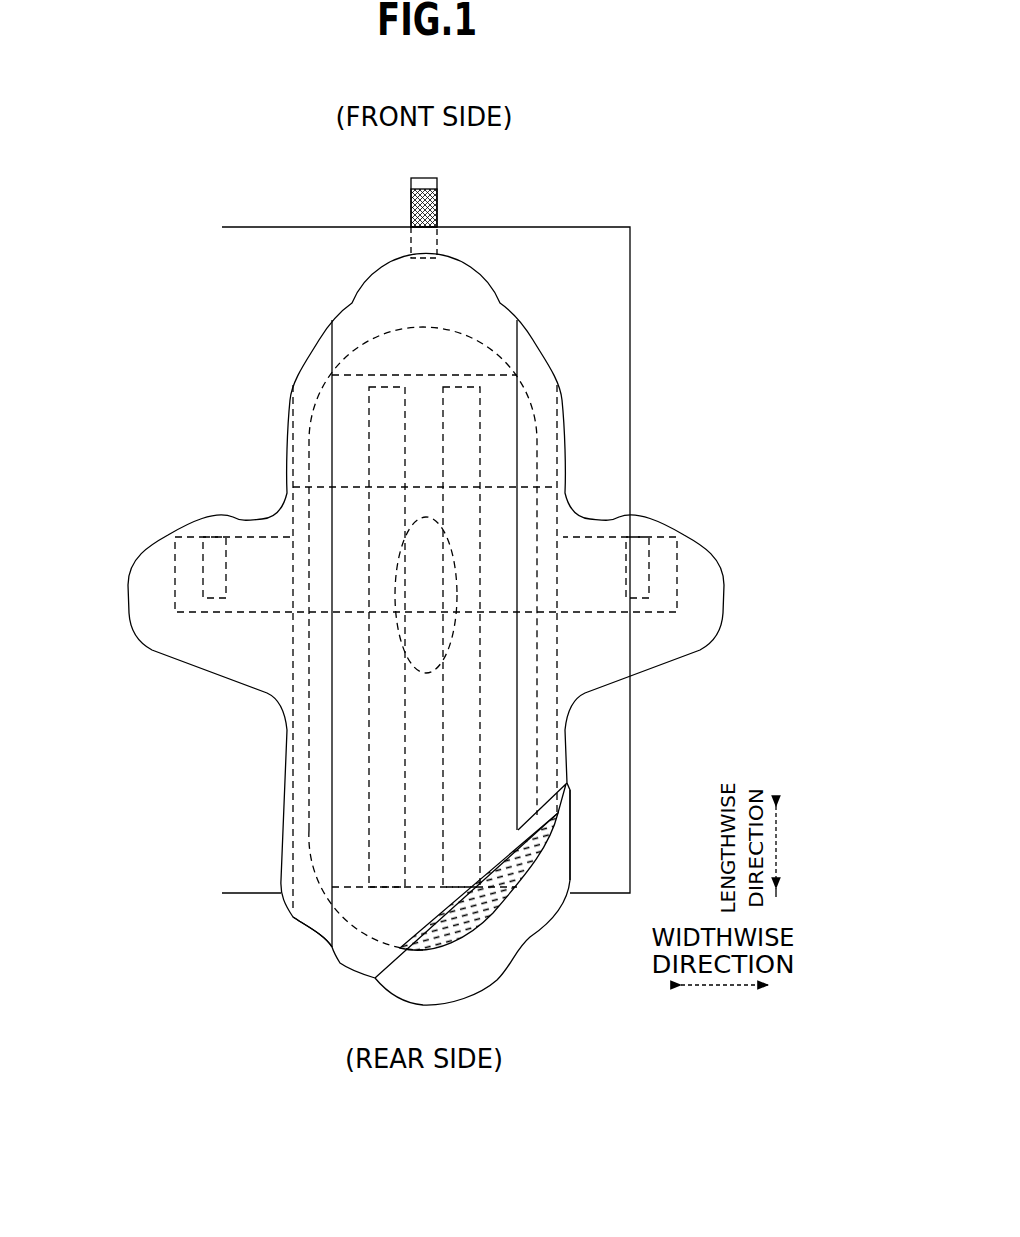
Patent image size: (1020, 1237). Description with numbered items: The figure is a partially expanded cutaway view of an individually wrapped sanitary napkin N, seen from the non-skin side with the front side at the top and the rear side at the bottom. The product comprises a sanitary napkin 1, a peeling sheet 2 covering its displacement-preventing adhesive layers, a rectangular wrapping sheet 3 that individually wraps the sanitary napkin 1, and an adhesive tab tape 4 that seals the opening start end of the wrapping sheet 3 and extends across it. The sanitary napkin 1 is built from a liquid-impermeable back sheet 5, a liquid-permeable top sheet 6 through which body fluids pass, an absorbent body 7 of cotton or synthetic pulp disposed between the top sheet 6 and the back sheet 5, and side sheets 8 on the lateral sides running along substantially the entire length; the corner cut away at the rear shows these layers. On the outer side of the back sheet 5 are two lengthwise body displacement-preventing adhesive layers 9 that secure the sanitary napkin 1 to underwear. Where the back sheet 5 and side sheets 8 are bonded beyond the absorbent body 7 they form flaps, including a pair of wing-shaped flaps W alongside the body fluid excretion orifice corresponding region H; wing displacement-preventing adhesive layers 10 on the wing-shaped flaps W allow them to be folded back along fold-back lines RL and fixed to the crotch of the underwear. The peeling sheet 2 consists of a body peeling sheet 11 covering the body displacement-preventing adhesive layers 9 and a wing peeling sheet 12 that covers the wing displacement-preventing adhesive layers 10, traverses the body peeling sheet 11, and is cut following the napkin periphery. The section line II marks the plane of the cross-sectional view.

The sanitary napkin 1 is at (549, 356).
The peeling sheet 2 is at (565, 415).
The wrapping sheet 3 is at (588, 224).
The adhesive tab tape 4 is at (408, 190).
The back sheet 5 is at (520, 917).
The top sheet 6 is at (353, 957).
The absorbent body 7 is at (460, 932).
The side sheets 8 is at (285, 735).
The body displacement-preventing adhesive layers 9 is at (363, 375).
The wing displacement-preventing adhesive layers 10 is at (190, 545).
The body peeling sheet 11 is at (348, 373).
The wing peeling sheet 12 is at (662, 613).
The body fluid excretion orifice corresponding region H is at (397, 548).
The fold-back lines RL is at (258, 518).
The wing-shaped flaps W is at (140, 539).
The individually wrapped sanitary napkin N is at (675, 216).
The section line II is at (117, 582).